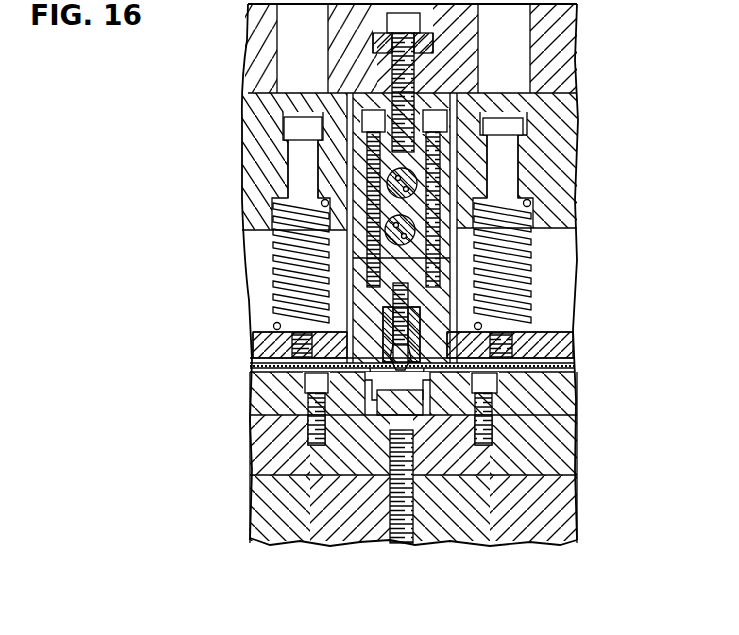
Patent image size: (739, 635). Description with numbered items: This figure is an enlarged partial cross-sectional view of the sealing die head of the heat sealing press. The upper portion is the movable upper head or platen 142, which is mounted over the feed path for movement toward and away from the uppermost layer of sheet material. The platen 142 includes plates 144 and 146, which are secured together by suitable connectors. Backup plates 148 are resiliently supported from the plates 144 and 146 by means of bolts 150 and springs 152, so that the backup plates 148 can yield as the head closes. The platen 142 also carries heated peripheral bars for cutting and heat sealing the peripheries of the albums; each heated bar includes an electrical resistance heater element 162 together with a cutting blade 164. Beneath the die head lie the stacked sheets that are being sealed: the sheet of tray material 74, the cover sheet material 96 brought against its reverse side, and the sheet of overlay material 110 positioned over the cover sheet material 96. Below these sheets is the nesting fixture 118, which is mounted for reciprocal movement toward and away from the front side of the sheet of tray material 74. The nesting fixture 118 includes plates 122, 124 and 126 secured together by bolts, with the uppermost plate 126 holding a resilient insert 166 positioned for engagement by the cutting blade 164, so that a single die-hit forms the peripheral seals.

The movable upper head or platen 142 is at (233, 57).
The plate 144 is at (572, 62).
The plate 146 is at (557, 170).
The bolt 150 is at (303, 116).
The electrical resistance heater element 162 is at (392, 225).
The spring 152 is at (268, 273).
The cutting blade 164 is at (375, 368).
The resilient insert 166 is at (388, 380).
The backup plate 148 is at (262, 354).
The sheet of overlay material 110 is at (575, 352).
The sheet material 96 is at (577, 361).
The sheet material 74 is at (584, 370).
The plate 126 is at (268, 395).
The plate 124 is at (265, 447).
The plate 122 is at (278, 507).
The nesting fixture 118 is at (590, 443).